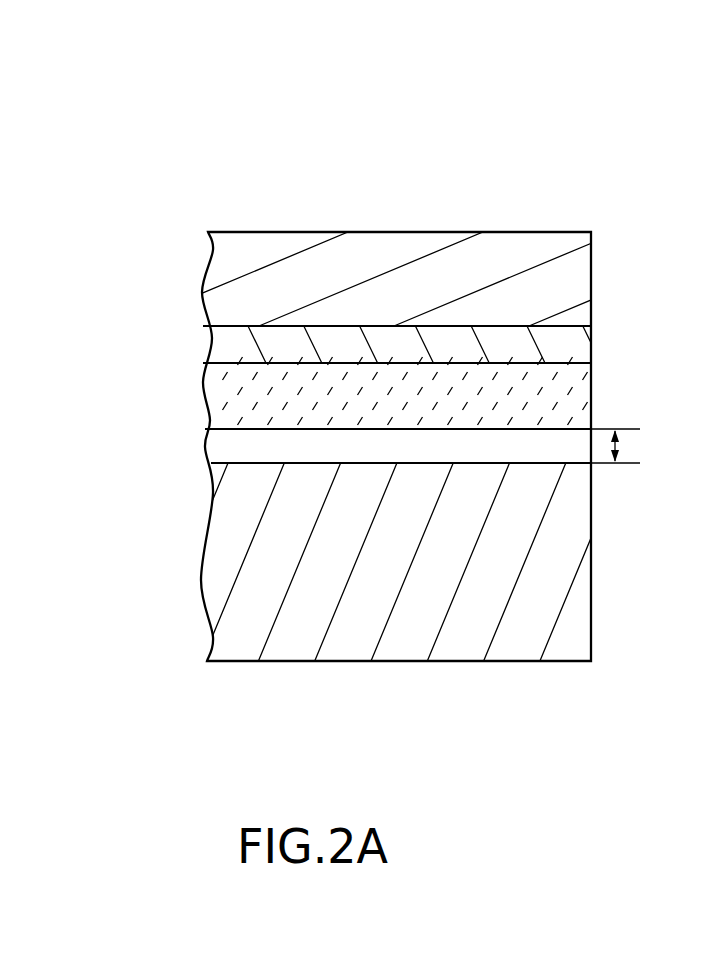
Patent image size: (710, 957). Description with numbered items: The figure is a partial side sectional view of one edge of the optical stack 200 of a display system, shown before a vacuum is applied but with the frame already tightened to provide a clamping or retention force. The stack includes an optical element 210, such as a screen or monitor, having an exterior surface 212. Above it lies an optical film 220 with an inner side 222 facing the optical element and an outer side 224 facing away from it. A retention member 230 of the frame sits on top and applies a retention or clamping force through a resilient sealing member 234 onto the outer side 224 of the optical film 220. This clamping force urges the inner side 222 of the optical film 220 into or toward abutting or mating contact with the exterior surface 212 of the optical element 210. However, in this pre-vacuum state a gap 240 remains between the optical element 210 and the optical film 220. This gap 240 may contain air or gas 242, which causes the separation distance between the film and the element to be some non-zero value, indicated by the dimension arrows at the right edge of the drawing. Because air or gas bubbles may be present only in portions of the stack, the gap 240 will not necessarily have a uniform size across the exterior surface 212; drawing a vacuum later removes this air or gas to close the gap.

The layered structure 200 is at (455, 153).
The optical element 210 is at (305, 680).
The exterior surface 212 is at (250, 462).
The optical film 220 is at (194, 395).
The inner side 222 is at (525, 430).
The outer side 224 is at (230, 358).
The retention member 230 is at (538, 220).
The resilient sealing member 234 is at (195, 342).
The gap 240 is at (196, 459).
The air or gas 242 is at (403, 458).